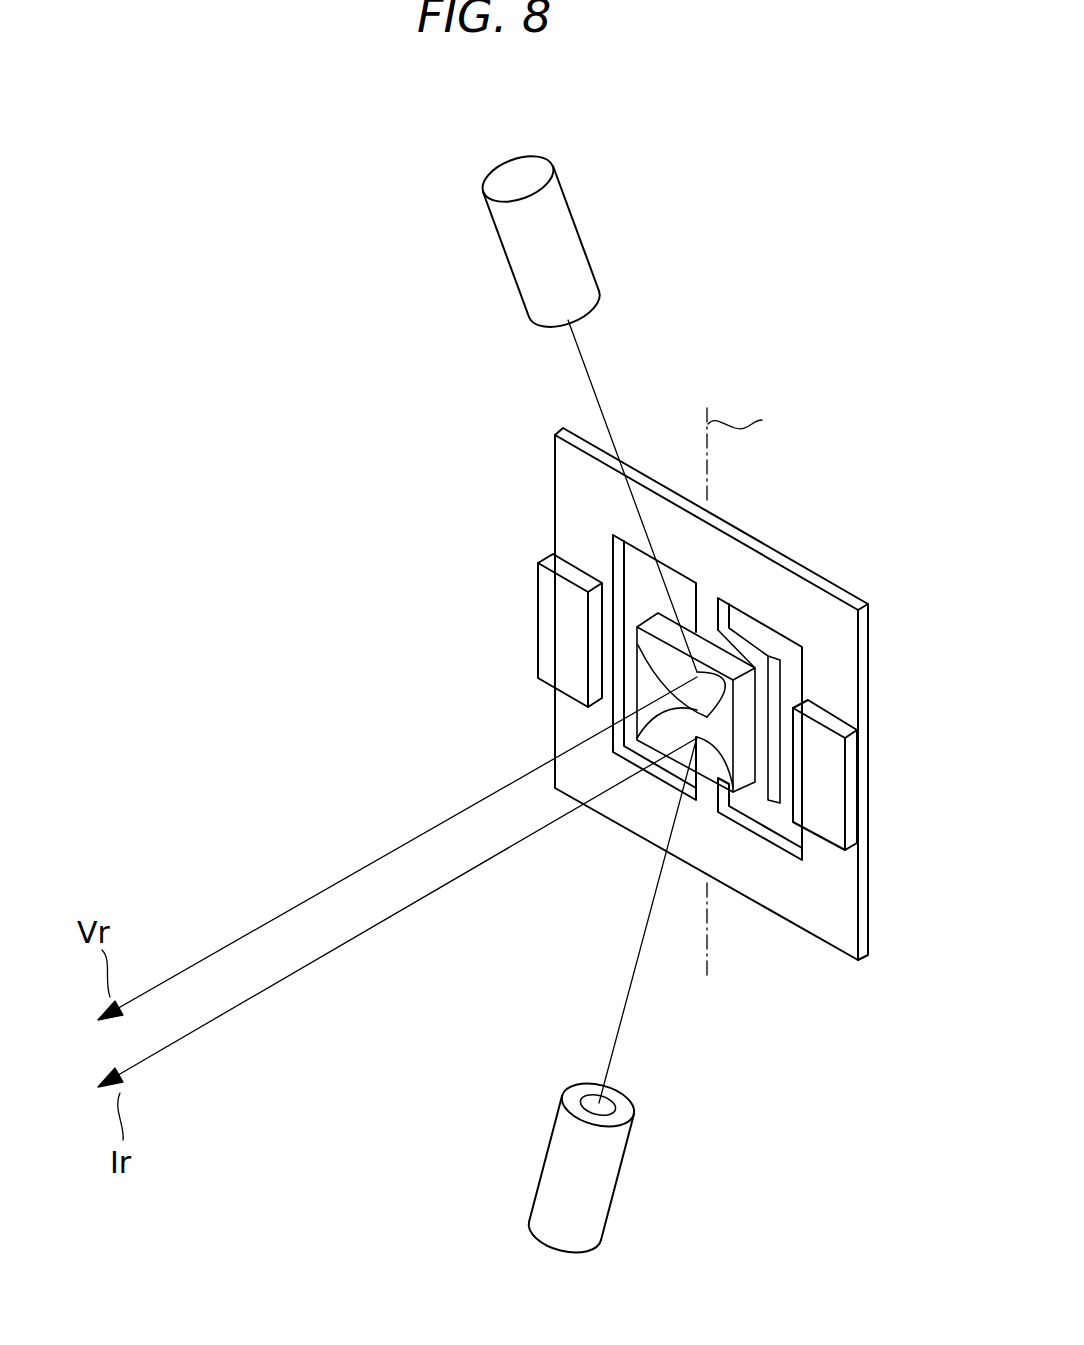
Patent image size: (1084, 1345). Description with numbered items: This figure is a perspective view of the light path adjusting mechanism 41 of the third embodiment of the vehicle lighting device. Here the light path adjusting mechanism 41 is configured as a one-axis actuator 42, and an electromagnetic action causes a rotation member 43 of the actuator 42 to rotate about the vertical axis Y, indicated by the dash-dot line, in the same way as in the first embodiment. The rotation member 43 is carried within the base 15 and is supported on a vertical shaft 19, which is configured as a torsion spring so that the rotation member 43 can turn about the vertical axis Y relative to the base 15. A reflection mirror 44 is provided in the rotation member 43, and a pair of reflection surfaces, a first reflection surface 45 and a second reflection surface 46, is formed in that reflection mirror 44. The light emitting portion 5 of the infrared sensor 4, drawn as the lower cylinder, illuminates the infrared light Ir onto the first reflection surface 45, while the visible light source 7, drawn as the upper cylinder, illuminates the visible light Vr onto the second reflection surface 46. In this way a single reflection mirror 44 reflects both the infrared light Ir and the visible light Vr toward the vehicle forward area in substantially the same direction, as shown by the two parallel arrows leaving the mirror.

The infrared sensor 4 is at (521, 1119).
The light emitting portion 5 is at (566, 1160).
The visible light source 7 is at (525, 263).
The base 15 is at (716, 715).
The vertical shaft 19 is at (710, 600).
The light path adjusting mechanism 41 is at (519, 501).
The one-axis actuator 42 is at (825, 577).
The rotation member 43 is at (782, 672).
The reflection mirror 44 is at (637, 652).
The first reflection surface 45 is at (697, 742).
The second reflection surface 46 is at (735, 668).